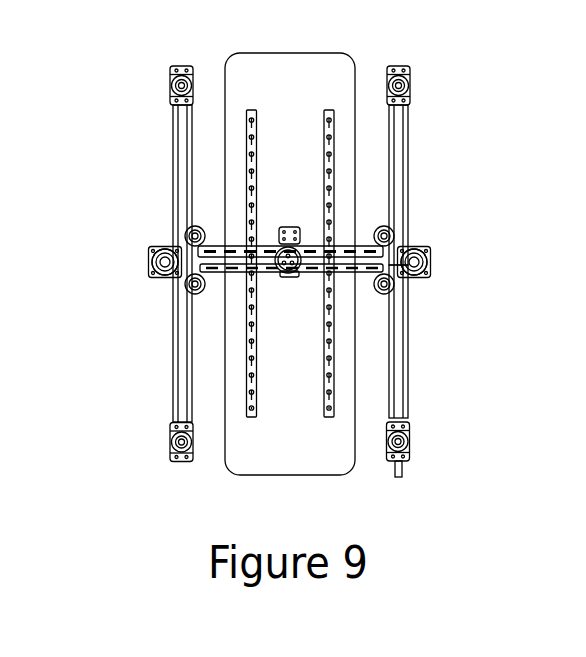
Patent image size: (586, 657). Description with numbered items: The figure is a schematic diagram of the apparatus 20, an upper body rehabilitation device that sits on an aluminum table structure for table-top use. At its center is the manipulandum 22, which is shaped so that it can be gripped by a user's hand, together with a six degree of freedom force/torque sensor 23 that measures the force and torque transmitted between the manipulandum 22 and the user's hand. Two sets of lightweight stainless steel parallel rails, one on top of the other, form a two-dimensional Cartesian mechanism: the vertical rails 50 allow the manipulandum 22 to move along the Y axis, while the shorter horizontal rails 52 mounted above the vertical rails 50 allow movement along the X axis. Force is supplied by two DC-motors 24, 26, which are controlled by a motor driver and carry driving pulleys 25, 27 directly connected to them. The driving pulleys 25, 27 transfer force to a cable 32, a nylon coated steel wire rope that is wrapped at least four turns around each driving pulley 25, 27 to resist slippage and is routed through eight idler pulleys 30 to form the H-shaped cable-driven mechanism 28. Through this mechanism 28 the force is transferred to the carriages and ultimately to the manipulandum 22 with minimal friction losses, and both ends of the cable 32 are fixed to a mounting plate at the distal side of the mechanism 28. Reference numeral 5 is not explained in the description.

The guide rail 5 is at (245, 158).
The apparatus 20 is at (90, 319).
The manipulandum 22 is at (290, 226).
The force/torque sensor 23 is at (303, 252).
The DC-motor 24 is at (151, 247).
The driving pulley 25 is at (149, 262).
The DC-motor 26 is at (429, 247).
The driving pulley 27 is at (433, 266).
The H-shaped cable-driven mechanism 28 is at (408, 138).
The idler pulley 30 is at (170, 82).
The cable 32 is at (408, 380).
The vertical rails 50 is at (328, 110).
The horizontal rails 52 is at (205, 273).